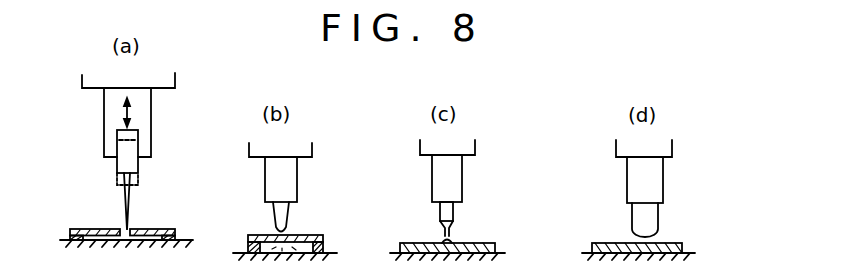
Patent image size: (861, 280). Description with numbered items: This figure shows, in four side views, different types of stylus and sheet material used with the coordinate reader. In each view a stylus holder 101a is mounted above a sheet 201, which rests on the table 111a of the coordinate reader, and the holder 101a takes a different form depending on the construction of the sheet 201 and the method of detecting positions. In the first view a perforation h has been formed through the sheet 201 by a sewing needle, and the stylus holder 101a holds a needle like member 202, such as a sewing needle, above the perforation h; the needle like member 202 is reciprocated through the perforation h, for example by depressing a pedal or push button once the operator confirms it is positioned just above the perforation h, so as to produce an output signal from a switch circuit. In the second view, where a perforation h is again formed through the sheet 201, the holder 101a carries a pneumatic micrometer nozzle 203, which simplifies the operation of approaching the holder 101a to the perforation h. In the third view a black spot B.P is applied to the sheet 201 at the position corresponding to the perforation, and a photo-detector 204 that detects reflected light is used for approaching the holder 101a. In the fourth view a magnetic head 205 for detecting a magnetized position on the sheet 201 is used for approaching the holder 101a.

The stylus holder 101a is at (175, 77).
The sheet 201 is at (70, 229).
The needle like member 202 is at (125, 207).
The pneumatic micrometer nozzle 203 is at (288, 223).
The photo-detector 204 is at (440, 217).
The magnetic head 205 is at (658, 215).
The table 111a is at (184, 239).
The perforation h is at (131, 228).
The black spot B.P is at (457, 236).